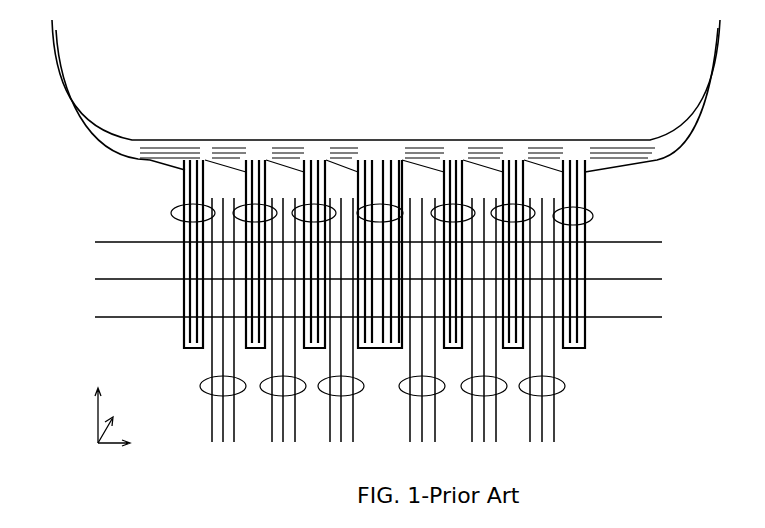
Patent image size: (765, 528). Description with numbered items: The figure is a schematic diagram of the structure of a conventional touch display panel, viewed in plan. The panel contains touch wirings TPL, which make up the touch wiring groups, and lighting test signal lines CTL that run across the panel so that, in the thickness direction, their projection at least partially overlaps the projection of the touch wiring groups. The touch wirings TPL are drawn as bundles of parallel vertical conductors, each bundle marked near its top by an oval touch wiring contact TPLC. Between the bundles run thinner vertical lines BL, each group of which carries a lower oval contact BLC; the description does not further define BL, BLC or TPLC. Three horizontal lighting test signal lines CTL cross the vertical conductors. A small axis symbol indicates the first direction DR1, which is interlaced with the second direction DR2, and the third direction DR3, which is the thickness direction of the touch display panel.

The touch wiring TPL is at (586, 330).
The top plate line contact TPLC is at (592, 220).
The lighting test signal line CTL is at (615, 278).
The bit line BL is at (556, 418).
The bit line contact BLC is at (556, 380).
The first direction DR1 is at (106, 409).
The second direction DR2 is at (127, 444).
The third direction DR3 is at (115, 423).